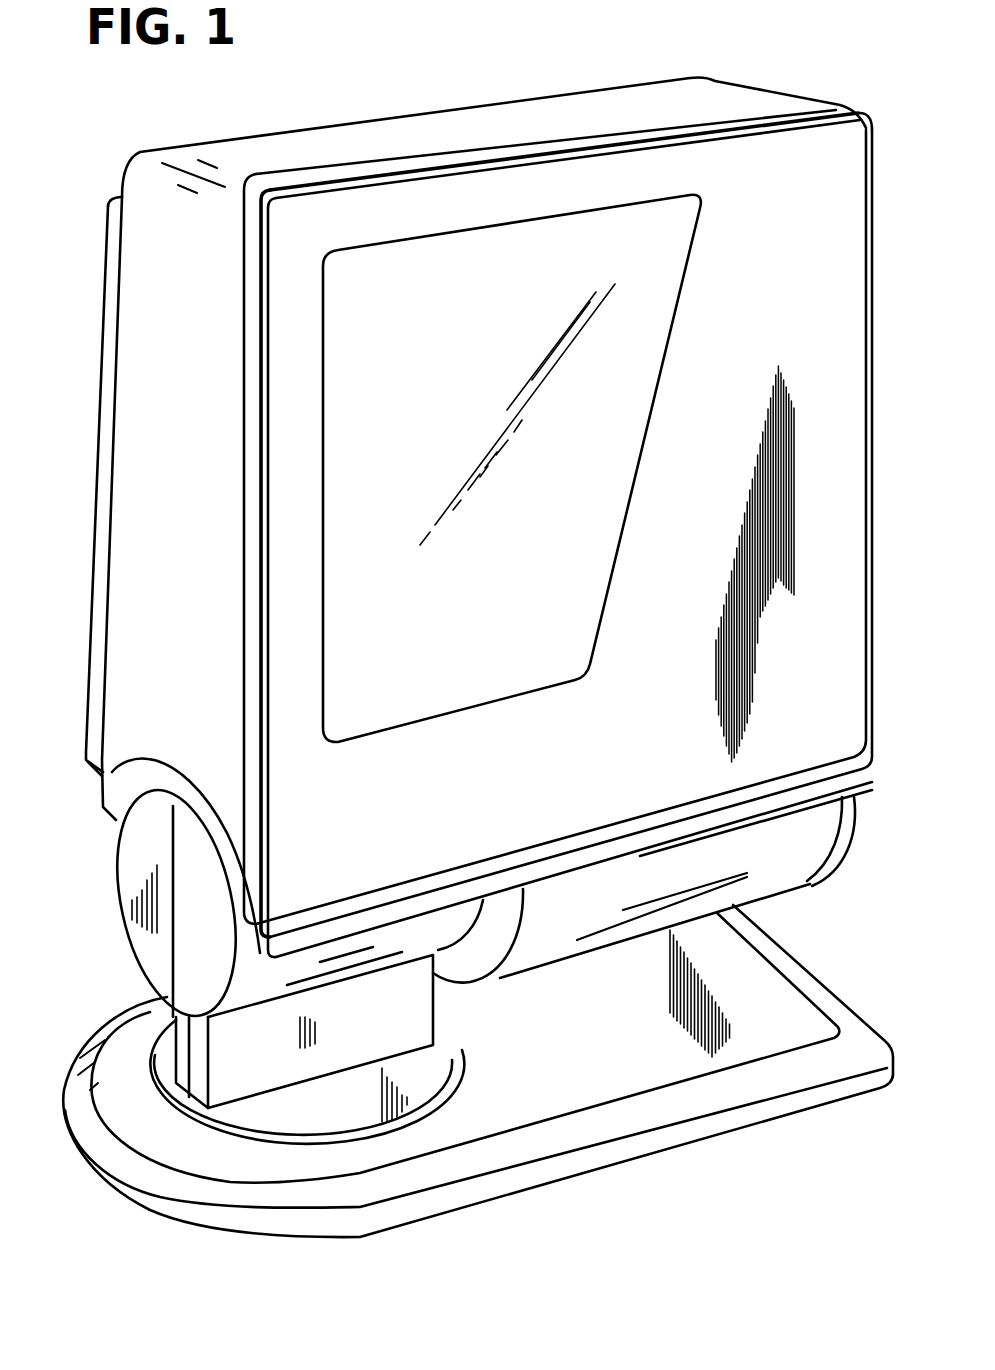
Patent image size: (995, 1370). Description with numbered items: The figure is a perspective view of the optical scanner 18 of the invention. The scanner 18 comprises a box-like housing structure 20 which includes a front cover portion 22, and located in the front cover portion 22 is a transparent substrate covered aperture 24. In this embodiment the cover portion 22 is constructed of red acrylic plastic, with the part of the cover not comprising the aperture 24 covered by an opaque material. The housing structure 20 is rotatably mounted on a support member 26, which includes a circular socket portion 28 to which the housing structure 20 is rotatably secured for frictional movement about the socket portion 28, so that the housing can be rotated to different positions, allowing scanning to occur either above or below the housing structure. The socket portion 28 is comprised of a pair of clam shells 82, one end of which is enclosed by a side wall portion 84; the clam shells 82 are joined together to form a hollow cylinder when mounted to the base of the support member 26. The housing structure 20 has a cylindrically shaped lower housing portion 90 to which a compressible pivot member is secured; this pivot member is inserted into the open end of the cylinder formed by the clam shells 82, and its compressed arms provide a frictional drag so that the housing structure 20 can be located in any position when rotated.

The optical scanner 18 is at (404, 90).
The housing structure 20 is at (755, 89).
The front cover portion 22 is at (853, 202).
The transparent substrate covered aperture 24 is at (674, 320).
The support member 26 is at (118, 1218).
The circular socket portion 28 is at (130, 952).
The clam shells 82 is at (430, 935).
The side wall portion 84 is at (128, 853).
The cylindrically shaped lower housing portion 90 is at (814, 845).